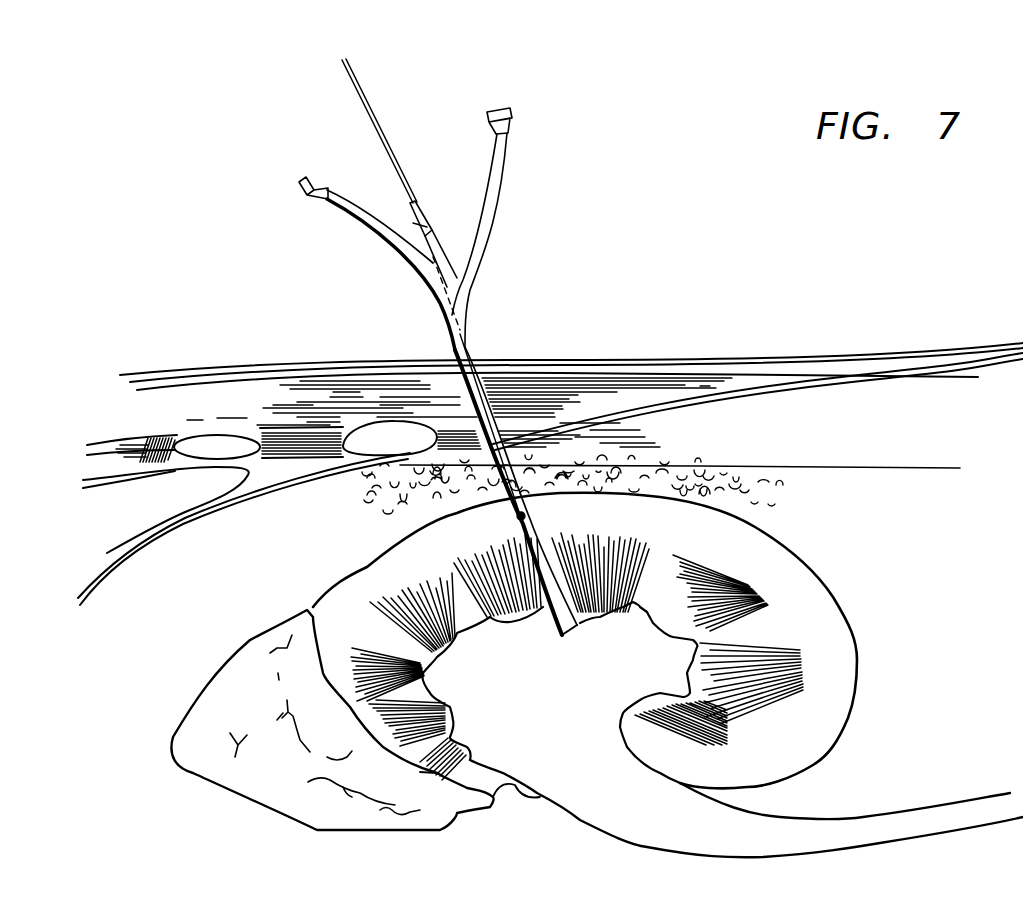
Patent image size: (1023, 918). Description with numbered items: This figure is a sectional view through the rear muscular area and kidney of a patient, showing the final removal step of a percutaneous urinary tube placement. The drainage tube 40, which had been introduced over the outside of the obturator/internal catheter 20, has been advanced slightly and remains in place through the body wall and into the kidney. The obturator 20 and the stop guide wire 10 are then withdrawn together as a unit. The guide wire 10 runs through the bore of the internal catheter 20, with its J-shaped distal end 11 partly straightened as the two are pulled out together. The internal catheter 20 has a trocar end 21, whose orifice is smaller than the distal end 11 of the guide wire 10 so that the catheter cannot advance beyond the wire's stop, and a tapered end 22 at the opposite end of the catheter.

The guide wire 10 is at (373, 103).
The obturator/internal catheter 20 is at (432, 232).
The trocar end 21 is at (410, 204).
The drainage tube 40 is at (467, 336).
The distal end 11 is at (528, 508).
The tapered end 22 is at (502, 473).